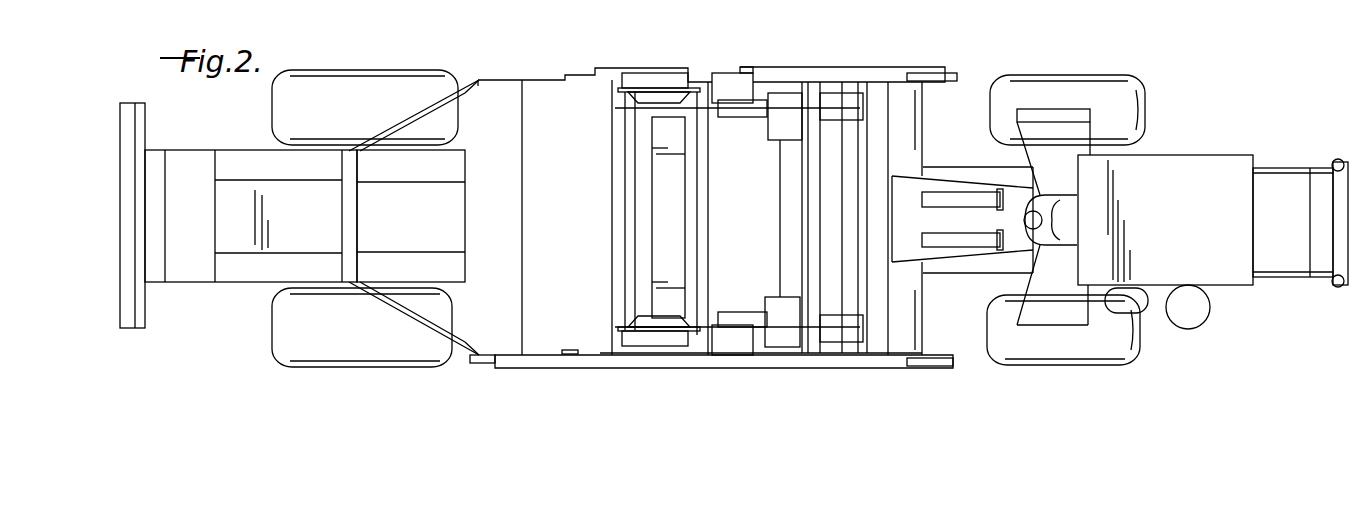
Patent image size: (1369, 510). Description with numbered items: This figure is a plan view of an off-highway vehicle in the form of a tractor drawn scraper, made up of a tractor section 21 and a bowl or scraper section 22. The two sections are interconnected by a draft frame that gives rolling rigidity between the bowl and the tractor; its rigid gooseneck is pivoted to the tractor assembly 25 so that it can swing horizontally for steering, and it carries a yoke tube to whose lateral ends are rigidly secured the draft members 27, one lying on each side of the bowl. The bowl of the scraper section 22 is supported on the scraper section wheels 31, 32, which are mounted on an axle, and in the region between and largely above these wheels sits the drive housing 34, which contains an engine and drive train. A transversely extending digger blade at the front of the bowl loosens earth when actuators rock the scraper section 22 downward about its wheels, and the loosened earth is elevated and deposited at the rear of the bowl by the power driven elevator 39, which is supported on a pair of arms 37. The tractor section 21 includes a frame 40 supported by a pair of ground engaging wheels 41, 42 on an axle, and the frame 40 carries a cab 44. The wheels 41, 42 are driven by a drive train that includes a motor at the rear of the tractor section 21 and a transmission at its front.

The tractor section 21 is at (1174, 237).
The bowl or scraper section 22 is at (608, 369).
The tractor assembly 25 is at (1030, 232).
The draft members 27 is at (878, 45).
The scraper section wheel 31 is at (282, 333).
The scraper section wheel 32 is at (398, 45).
The drive housing 34 is at (426, 290).
The arms 37 is at (705, 83).
The power driven elevator 39 is at (660, 100).
The frame 40 is at (1345, 166).
The ground engaging wheel 41 is at (1020, 348).
The ground engaging wheel 42 is at (1122, 55).
The cab 44 is at (1242, 128).